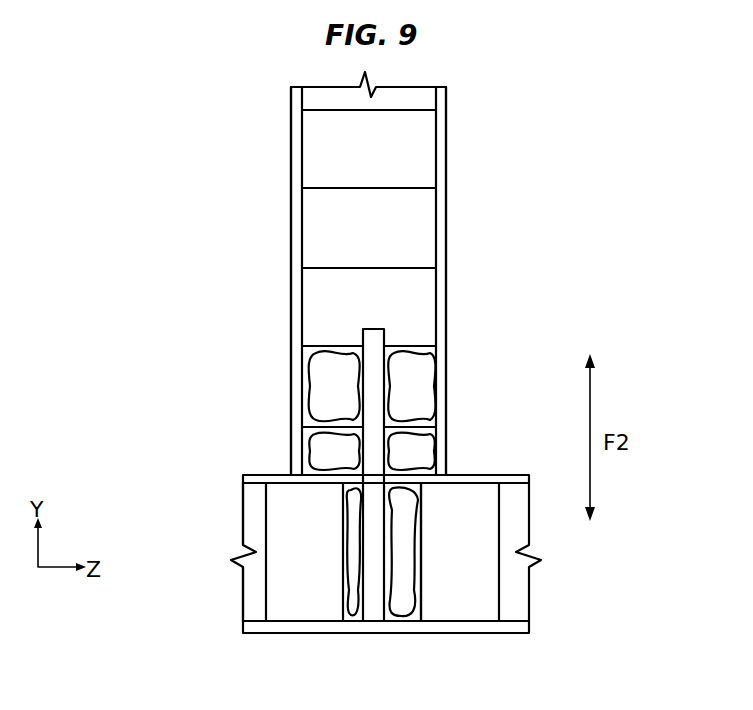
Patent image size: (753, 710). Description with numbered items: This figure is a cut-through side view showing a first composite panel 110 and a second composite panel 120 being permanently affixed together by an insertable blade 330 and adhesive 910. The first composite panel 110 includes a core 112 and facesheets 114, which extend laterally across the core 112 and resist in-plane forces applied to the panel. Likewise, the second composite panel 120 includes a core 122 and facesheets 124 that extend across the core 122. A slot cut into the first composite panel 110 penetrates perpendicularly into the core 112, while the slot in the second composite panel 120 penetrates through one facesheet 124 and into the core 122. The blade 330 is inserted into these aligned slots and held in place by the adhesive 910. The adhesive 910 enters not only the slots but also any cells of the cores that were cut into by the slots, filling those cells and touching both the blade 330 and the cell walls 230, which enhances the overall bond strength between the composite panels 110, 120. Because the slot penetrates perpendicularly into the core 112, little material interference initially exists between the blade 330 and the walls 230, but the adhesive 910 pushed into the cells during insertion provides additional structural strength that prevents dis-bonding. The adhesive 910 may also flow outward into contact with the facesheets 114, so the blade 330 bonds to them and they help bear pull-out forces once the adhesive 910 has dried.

The first composite panel 110 is at (552, 257).
The core 112 is at (318, 165).
The facesheets 114 is at (291, 300).
The second composite panel 120 is at (585, 553).
The core 122 is at (243, 523).
The facesheets 124 is at (245, 478).
The cell walls 230 is at (437, 426).
The blade 330 is at (385, 338).
The adhesive 910 is at (312, 368).